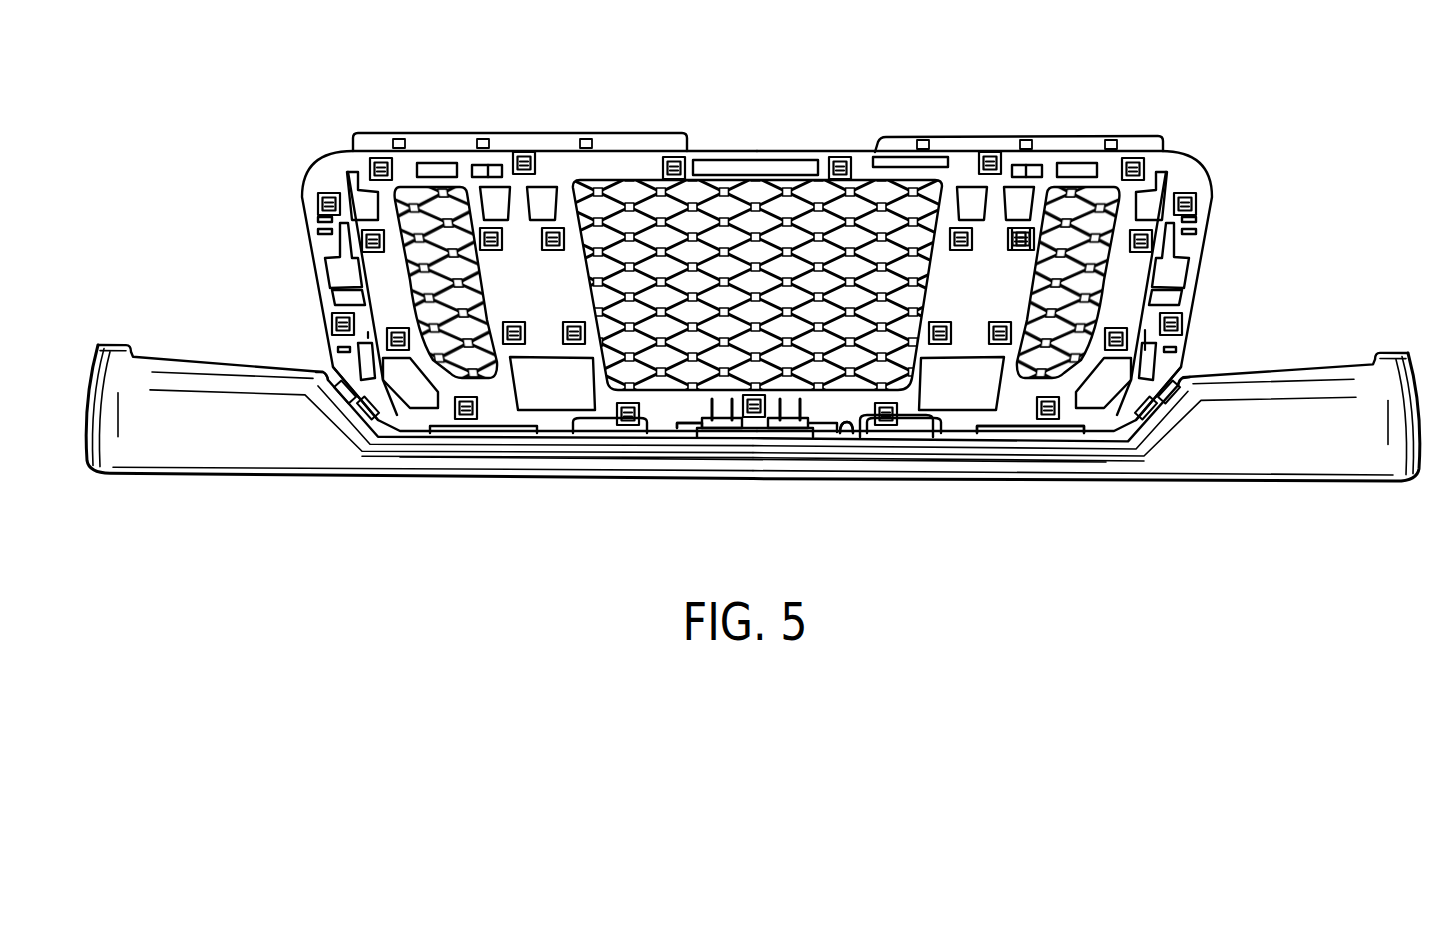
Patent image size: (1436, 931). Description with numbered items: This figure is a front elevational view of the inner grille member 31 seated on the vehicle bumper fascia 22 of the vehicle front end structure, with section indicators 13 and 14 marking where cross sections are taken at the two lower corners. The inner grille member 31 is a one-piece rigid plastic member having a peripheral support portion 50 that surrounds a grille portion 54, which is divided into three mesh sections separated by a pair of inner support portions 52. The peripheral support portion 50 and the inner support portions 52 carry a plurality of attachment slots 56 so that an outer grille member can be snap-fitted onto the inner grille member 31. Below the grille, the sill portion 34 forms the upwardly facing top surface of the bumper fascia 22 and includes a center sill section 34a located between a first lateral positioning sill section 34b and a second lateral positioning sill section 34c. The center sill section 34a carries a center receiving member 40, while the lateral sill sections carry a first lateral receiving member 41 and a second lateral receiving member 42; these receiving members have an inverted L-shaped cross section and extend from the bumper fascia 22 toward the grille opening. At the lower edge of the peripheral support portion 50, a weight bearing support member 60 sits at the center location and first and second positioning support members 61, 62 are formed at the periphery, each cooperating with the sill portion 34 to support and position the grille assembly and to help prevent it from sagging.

The section line 13- 13 is at (322, 312).
The section line 14- 14 is at (1145, 330).
The vehicle bumper fascia 22 is at (1309, 362).
The inner grille member 31 is at (1214, 180).
The sill portion 34 is at (558, 437).
The center sill section 34a is at (857, 434).
The first lateral positioning sill section 34b is at (323, 376).
The second lateral positioning sill section 34c is at (1195, 372).
The center receiving member 40 is at (693, 430).
The first lateral receiving member 41 is at (333, 405).
The second lateral receiving member 42 is at (1157, 410).
The peripheral support portion 50 is at (963, 426).
The inner support portions 52 is at (530, 273).
The grille portion 54 is at (778, 217).
The attachment slots 56 is at (1018, 233).
The weight bearing support member 60 is at (771, 437).
The first positioning support member 61 is at (363, 414).
The second positioning support member 62 is at (1165, 410).